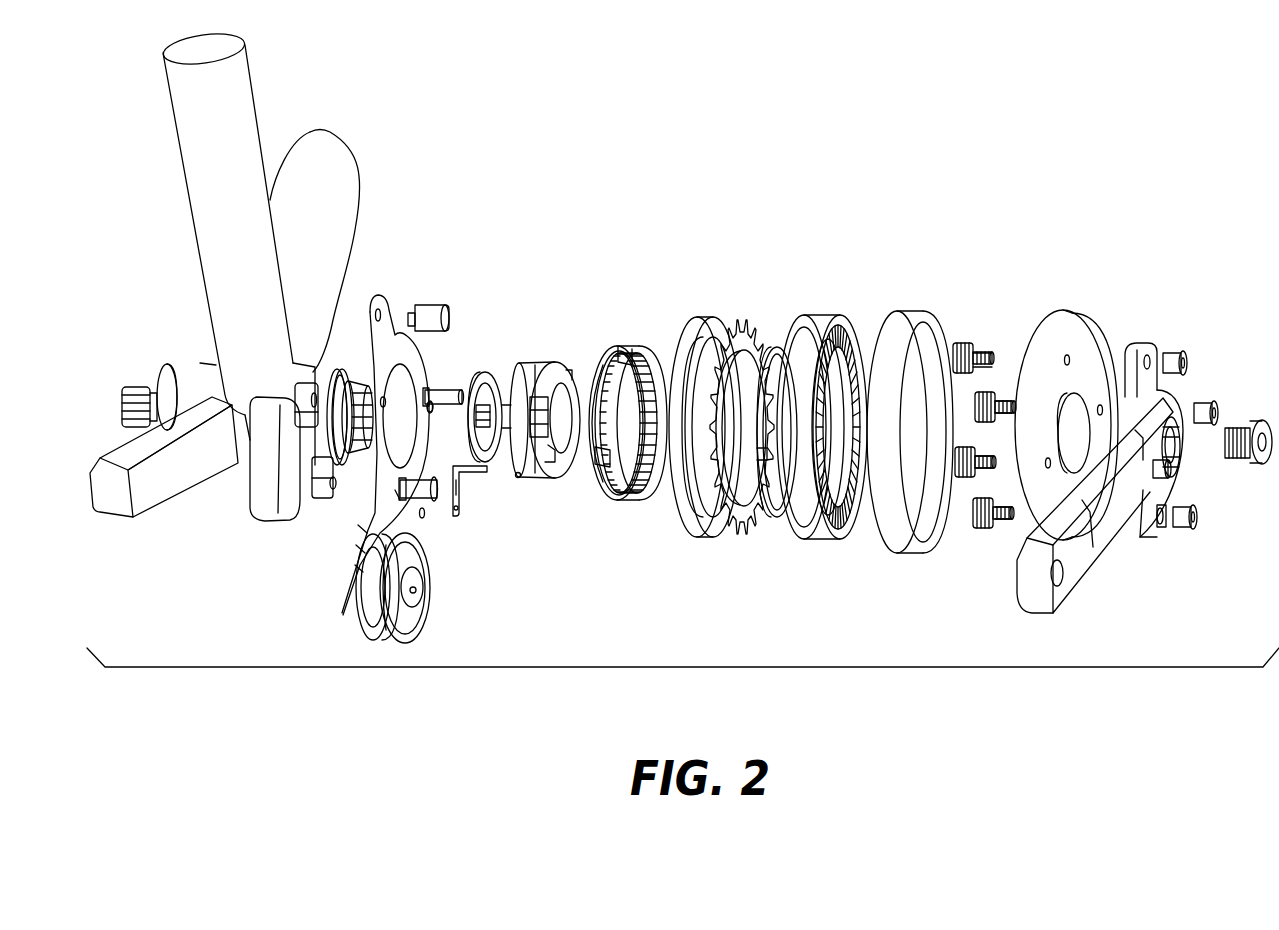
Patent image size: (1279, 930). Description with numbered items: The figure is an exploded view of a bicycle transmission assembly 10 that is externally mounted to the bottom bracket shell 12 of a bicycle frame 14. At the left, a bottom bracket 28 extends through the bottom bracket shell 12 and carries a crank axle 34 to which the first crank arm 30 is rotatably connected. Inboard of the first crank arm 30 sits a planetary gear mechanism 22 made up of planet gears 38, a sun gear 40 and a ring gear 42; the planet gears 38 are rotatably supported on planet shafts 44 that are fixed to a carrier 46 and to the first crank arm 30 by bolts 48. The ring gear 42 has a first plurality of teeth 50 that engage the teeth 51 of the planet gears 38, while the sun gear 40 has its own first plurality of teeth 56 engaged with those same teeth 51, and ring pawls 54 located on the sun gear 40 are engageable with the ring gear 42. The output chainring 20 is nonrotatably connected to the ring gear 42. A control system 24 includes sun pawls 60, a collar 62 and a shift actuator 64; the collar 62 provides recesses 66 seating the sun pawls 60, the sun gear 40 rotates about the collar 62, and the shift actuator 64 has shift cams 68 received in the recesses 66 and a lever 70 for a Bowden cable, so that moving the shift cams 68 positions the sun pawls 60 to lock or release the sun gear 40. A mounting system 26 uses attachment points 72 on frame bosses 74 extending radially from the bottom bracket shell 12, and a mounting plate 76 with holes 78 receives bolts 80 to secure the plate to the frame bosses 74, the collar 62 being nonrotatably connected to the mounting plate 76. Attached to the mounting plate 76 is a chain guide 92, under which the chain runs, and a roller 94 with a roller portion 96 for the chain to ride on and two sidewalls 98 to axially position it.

The bicycle transmission assembly 10 is at (455, 170).
The bottom bracket shell 12 is at (357, 287).
The bicycle frame 14 is at (243, 110).
The output chainring 20 is at (757, 327).
The planetary gear mechanism 22 is at (728, 313).
The control system 24 is at (520, 340).
The mounting system 26 is at (307, 498).
The bottom bracket 28 is at (160, 360).
The first crank arm 30 is at (1107, 530).
The crank axle 34 is at (135, 383).
The planet gears 38 is at (962, 340).
The sun gear 40 is at (633, 353).
The ring gear 42 is at (812, 335).
The planet shafts 44 is at (1005, 397).
The carrier 46 is at (1077, 335).
The bolts 48 is at (1200, 405).
The first plurality of teeth 50 is at (847, 343).
The teeth 51 is at (827, 507).
The ring pawls 54 is at (610, 487).
The first plurality of teeth 56 is at (637, 487).
The sun pawls 60 is at (540, 380).
The collar 62 is at (560, 465).
The shift actuator 64 is at (483, 370).
The recesses 66 is at (537, 442).
The shift cams 68 is at (497, 467).
The lever 70 is at (468, 502).
The attachment points 72 is at (308, 375).
The frame bosses 74 is at (303, 398).
The mounting plate 76 is at (398, 510).
The holes 78 is at (440, 355).
The bolts 80 is at (447, 385).
The chain guide 92 is at (428, 310).
The roller 94 is at (408, 622).
The roller portion 96 is at (377, 583).
The sidewalls 98 is at (387, 618).